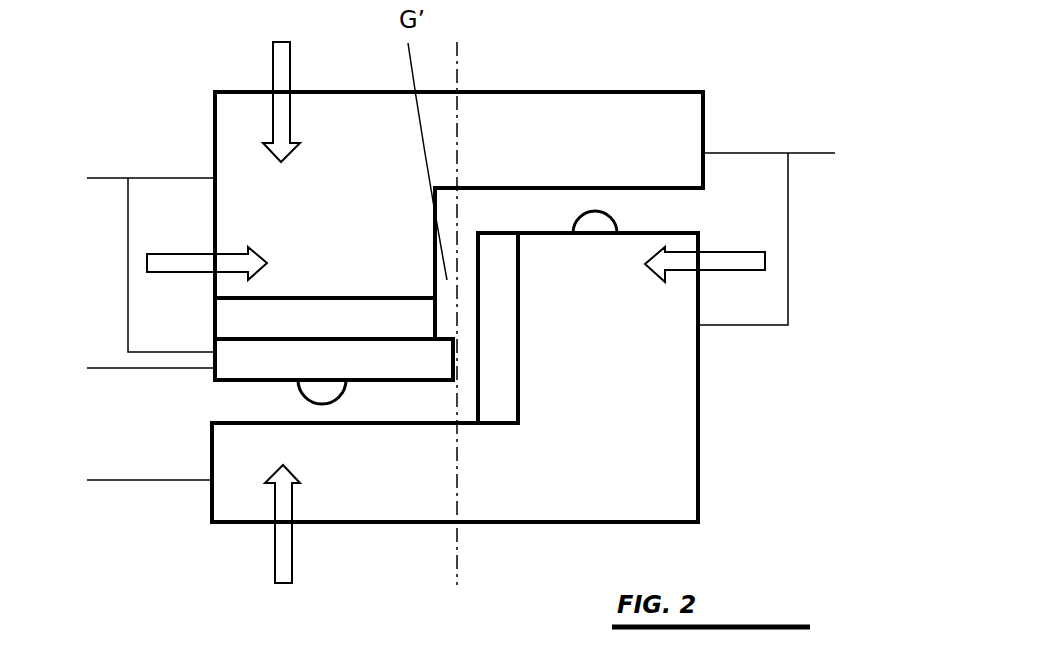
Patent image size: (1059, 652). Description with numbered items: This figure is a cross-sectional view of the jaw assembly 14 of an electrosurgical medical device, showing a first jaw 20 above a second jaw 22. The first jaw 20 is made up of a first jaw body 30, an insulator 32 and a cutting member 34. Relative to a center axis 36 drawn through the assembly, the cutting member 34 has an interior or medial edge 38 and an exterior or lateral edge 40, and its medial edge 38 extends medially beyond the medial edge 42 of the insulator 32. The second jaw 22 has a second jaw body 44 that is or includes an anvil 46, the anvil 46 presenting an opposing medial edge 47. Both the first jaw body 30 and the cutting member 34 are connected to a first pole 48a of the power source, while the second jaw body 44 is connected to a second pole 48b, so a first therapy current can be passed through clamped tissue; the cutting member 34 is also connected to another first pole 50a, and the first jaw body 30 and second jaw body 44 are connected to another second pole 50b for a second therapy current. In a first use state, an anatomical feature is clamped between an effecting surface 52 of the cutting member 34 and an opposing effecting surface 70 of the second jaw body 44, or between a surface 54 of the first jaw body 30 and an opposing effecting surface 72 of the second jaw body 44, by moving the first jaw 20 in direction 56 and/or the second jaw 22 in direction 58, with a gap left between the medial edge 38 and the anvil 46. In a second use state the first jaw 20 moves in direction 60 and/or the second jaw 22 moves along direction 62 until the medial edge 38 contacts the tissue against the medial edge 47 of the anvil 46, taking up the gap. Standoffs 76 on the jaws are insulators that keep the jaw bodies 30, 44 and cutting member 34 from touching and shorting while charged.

The jaw assembly 14 is at (696, 60).
The first jaw 20 is at (367, 74).
The second jaw 22 is at (365, 535).
The first jaw body 30 is at (325, 195).
The insulator 32 is at (325, 316).
The cutting member 34 is at (334, 359).
The center axis 36 is at (458, 60).
The medial edge 38 is at (453, 357).
The lateral edge 40 is at (212, 378).
The medial edge 42 is at (436, 317).
The second jaw body 44 is at (455, 472).
The anvil 46 is at (498, 328).
The medial edge 47 is at (476, 379).
The first pole 48a is at (126, 258).
The second pole 48b is at (124, 481).
The first pole 50a is at (126, 369).
The second pole 50b is at (791, 232).
The effecting surface 52 is at (265, 381).
The surface 54 is at (595, 188).
The direction 56 is at (283, 63).
The direction 58 is at (277, 572).
The direction 60 is at (173, 262).
The direction 62 is at (757, 258).
The effecting surface 70 is at (228, 424).
The effecting surface 72 is at (647, 233).
The standoff 76 is at (580, 222).